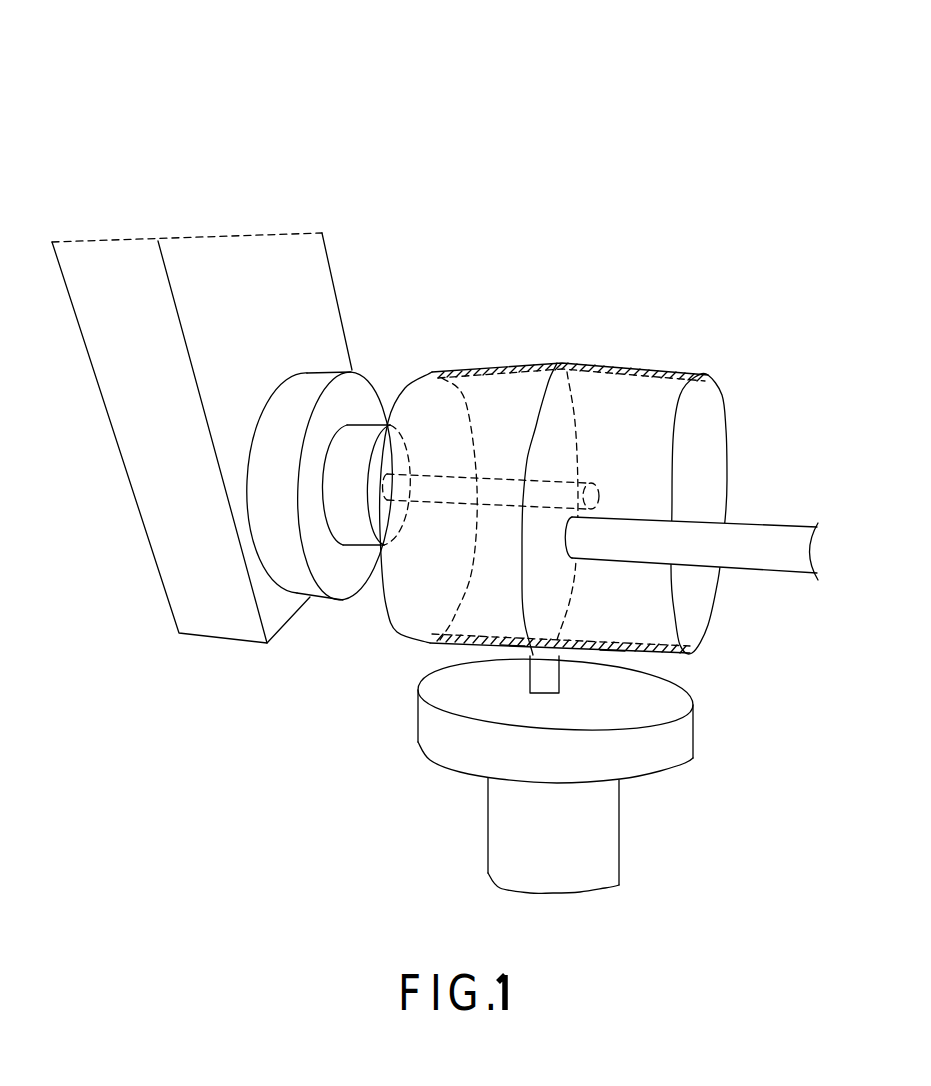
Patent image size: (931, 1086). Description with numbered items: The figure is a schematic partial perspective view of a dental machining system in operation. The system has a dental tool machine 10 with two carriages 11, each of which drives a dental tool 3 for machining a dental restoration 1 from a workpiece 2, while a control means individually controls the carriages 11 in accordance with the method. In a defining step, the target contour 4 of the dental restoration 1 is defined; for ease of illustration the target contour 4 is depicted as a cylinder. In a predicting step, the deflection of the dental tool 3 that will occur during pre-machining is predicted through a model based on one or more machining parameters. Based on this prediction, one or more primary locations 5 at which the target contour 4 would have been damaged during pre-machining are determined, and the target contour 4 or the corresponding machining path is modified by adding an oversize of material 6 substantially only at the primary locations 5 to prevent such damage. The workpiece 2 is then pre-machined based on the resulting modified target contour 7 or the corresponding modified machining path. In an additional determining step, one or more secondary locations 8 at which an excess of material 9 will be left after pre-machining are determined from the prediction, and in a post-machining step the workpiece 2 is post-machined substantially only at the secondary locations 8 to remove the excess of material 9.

The dental restoration 1 is at (745, 383).
The workpiece 2 is at (674, 808).
The dental tool 3 is at (540, 486).
The target contour 4 is at (608, 378).
The primary location 5 is at (583, 636).
The oversize of material 6 is at (512, 656).
The modified target contour 7 is at (612, 658).
The secondary location 8 is at (600, 366).
The excess of material 9 is at (530, 368).
The dental tool machine 10 is at (587, 106).
The carriage 11 is at (365, 271).